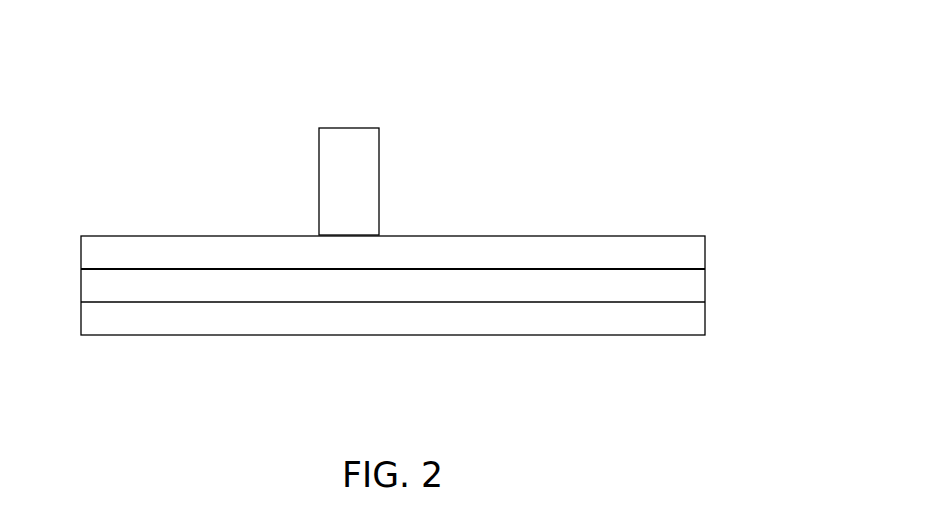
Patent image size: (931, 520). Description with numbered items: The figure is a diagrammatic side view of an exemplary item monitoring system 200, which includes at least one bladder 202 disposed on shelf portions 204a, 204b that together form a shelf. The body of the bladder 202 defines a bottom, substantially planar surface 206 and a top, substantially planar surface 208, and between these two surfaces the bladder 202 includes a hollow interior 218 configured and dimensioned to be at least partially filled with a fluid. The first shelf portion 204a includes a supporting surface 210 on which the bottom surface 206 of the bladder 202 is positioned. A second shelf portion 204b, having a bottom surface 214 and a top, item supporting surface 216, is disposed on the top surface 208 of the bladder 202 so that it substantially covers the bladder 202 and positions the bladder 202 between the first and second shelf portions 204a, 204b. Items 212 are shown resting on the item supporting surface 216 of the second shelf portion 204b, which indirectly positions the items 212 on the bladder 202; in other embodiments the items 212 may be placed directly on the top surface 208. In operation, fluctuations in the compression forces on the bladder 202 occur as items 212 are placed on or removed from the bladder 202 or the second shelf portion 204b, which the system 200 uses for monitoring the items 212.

The item monitoring system 200 is at (458, 62).
The bladder 202 is at (65, 270).
The first shelf portion 204a is at (310, 358).
The second shelf portion 204b is at (588, 212).
The bottom surface 206 is at (454, 302).
The top surface 208 is at (234, 268).
The supporting surface 210 is at (147, 302).
The items 212 is at (318, 157).
The bottom surface of second shelf portion 214 is at (582, 269).
The item supporting surface 216 is at (443, 236).
The hollow interior 218 is at (536, 287).